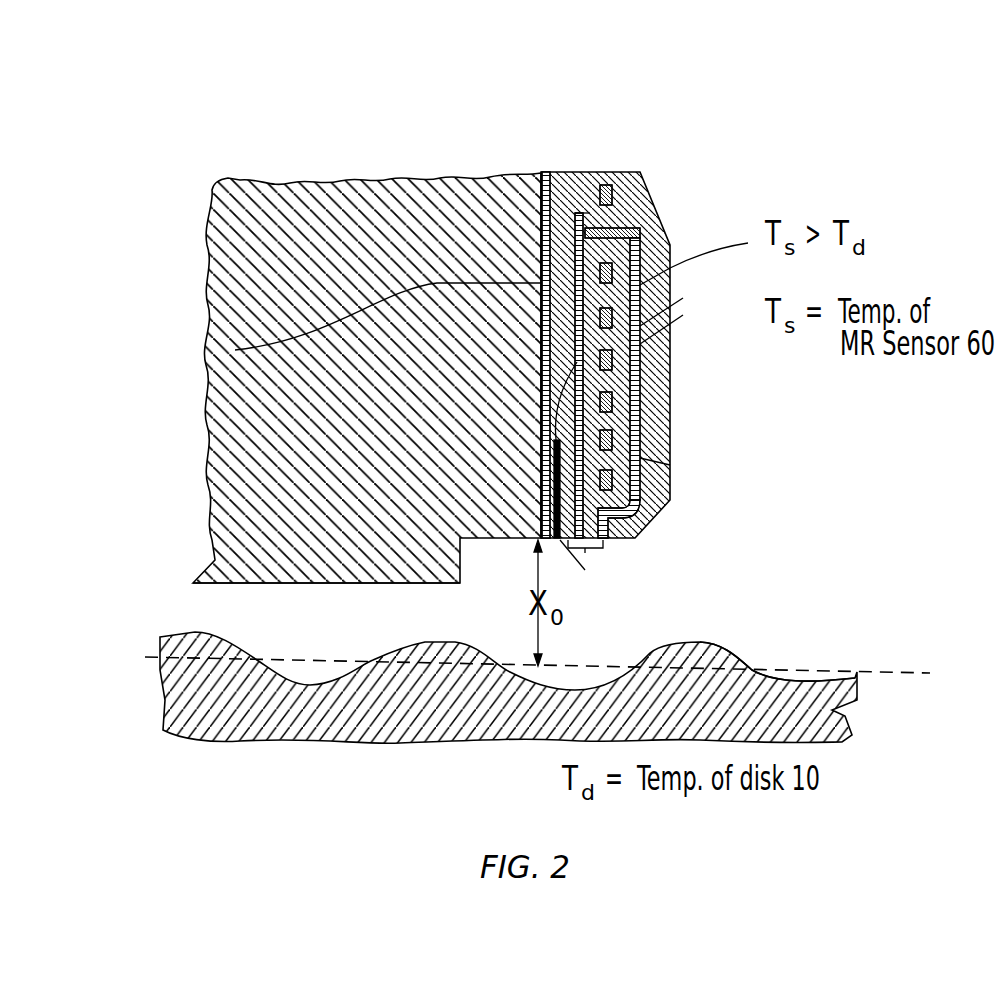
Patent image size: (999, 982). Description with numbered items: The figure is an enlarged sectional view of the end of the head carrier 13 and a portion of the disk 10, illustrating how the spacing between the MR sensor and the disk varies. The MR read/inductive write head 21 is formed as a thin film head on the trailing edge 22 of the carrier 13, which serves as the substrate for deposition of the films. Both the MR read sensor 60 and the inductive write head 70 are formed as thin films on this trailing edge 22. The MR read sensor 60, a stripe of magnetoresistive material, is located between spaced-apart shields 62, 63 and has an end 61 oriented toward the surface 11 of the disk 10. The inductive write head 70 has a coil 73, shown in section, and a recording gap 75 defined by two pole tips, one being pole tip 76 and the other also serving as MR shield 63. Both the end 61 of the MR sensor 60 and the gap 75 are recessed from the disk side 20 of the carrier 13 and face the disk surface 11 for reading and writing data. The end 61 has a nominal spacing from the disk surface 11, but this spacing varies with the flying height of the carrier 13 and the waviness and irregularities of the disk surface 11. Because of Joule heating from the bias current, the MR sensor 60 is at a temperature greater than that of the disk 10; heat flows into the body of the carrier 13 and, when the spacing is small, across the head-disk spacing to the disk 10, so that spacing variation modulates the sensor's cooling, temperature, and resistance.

The carrier 13 is at (301, 217).
The disk side 20 is at (226, 588).
The MR read/inductive write head 21 is at (545, 166).
The trailing edge 22 is at (524, 176).
The MR read sensor 60 is at (548, 462).
The end of MR read sensor 61 is at (560, 540).
The shield 62 is at (235, 350).
The shield 63 is at (640, 410).
The inductive write head 70 is at (640, 378).
The coil 73 is at (677, 315).
The recording gap 75 is at (587, 550).
The pole tip 76 is at (672, 465).
The disk 10 is at (846, 710).
The disk surface 11 is at (800, 683).